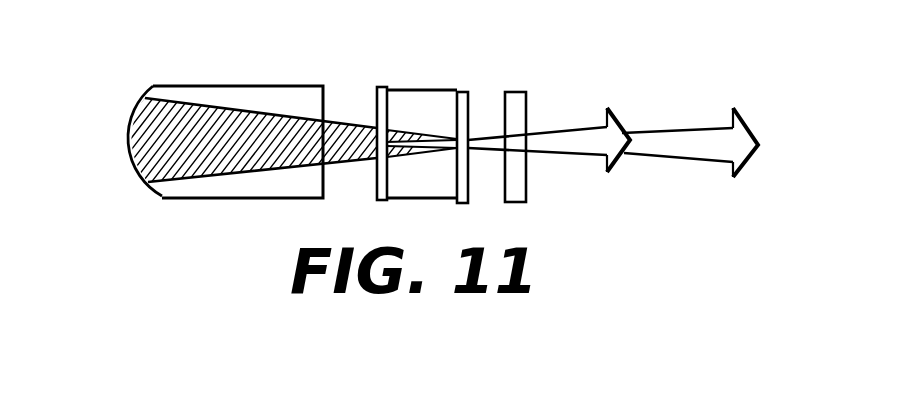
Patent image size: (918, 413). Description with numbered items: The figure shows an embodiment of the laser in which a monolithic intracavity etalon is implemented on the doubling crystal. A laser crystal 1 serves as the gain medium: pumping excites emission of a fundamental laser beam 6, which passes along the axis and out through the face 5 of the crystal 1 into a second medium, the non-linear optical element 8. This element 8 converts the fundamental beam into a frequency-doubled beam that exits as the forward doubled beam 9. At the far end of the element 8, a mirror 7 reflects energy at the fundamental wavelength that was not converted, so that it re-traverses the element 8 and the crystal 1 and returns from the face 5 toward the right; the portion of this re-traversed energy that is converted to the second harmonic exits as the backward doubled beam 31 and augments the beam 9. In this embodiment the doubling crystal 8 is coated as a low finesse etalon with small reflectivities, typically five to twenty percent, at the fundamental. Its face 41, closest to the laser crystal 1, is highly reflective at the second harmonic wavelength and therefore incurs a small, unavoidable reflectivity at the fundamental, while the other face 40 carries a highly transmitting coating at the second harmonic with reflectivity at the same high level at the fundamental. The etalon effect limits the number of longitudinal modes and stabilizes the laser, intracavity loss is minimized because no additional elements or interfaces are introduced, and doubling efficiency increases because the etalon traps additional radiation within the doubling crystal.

The laser crystal 1 is at (240, 198).
The face of the crystal 5 is at (110, 148).
The fundamental laser beam 6 is at (210, 107).
The face of the doubler 41 is at (387, 87).
The non-linear optical element 8 is at (438, 92).
The other face of the doubler 40 is at (458, 202).
The mirror 7 is at (513, 203).
The backward doubled beam 31 is at (618, 123).
The frequency-doubled beam 9 is at (663, 160).